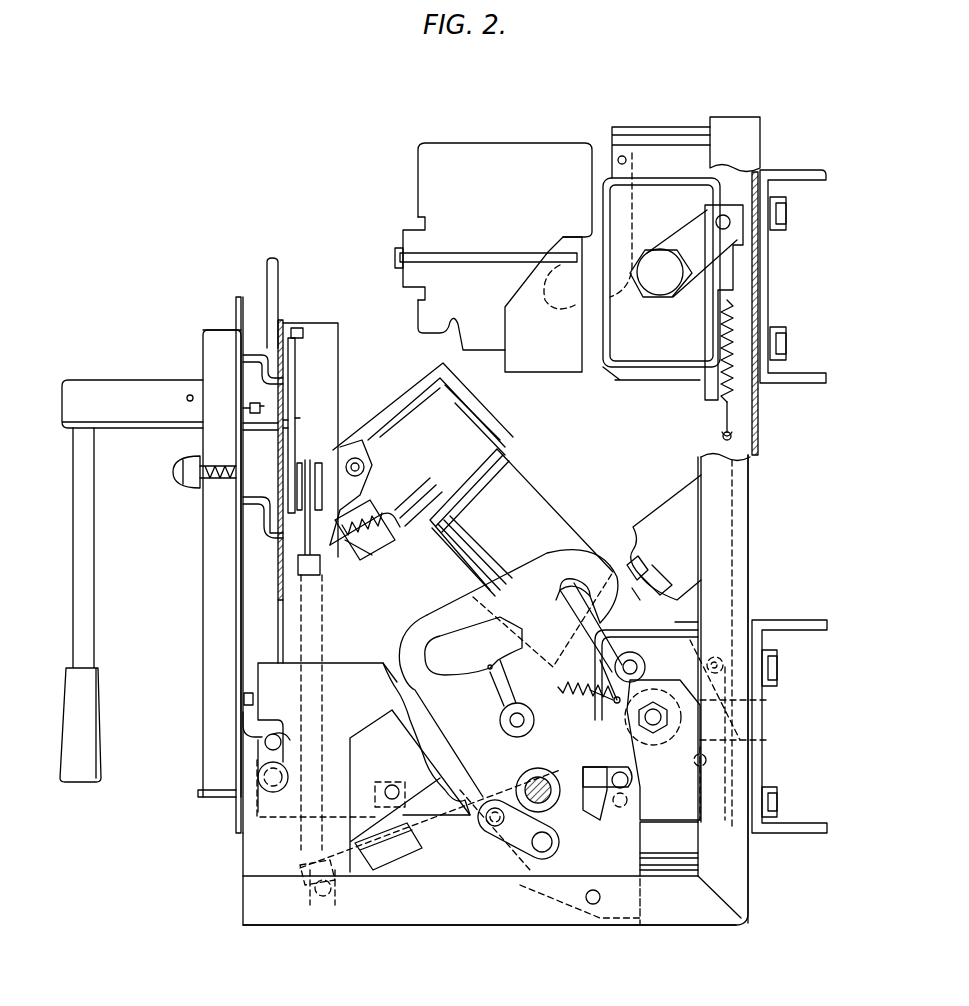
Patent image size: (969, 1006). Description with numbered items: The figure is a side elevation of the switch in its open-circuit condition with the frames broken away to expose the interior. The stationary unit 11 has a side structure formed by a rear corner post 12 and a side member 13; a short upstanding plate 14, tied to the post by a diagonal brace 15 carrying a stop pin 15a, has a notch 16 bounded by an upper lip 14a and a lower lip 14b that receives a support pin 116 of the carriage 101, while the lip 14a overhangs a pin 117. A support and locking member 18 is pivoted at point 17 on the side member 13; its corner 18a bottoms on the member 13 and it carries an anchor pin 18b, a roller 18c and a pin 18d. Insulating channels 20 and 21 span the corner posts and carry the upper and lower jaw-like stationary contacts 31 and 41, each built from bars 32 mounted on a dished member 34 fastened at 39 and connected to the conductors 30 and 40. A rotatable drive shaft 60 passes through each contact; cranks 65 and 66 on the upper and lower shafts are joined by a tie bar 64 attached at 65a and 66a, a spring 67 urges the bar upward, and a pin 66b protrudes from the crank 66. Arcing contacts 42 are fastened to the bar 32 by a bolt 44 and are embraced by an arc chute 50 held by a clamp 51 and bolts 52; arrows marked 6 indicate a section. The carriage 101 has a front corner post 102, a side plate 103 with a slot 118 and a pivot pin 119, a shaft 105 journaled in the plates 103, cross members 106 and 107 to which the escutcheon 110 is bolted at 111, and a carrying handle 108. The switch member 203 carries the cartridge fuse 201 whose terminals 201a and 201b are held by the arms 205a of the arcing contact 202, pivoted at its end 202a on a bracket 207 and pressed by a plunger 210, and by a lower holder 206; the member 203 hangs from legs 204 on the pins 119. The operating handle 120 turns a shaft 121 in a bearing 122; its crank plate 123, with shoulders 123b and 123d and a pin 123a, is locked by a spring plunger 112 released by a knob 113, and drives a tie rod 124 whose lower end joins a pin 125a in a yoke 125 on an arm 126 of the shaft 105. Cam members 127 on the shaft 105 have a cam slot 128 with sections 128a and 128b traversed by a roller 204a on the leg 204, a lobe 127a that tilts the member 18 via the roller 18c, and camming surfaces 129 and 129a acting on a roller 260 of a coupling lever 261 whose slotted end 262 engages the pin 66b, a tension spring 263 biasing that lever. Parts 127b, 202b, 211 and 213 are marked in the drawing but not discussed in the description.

The stationary unit 11 is at (784, 506).
The rear corner post 12 is at (758, 410).
The side member 13 is at (470, 905).
The upstanding plate 14 is at (243, 856).
The horizontal upper lip 14a is at (286, 718).
The vertical lower lip 14b is at (240, 778).
The diagonal brace 15 is at (672, 500).
The stop pin 15a is at (390, 785).
The notch 16 is at (278, 746).
The pivot point 17 is at (593, 905).
The support and locking member 18 is at (628, 840).
The corner 18a is at (642, 930).
The anchor pin 18b is at (628, 780).
The roller 18c is at (500, 806).
The laterally-protruding pin 18d is at (620, 807).
The upper horizontal channel 20 is at (800, 172).
The lower horizontal channel 21 is at (788, 830).
The incoming electric current conductor 30 is at (665, 127).
The upper stationary contact 31 is at (640, 328).
The bar 32 is at (700, 165).
The dished member 34 is at (604, 372).
The fastening means 39 is at (752, 215).
The outgoing electric current conductor 40 is at (670, 868).
The lower stationary contact 41 is at (685, 619).
The arcing contact 42 is at (568, 315).
The bolt 44 is at (626, 161).
The electric arc chute 50 is at (508, 143).
The clamp 51 is at (403, 232).
The long bolt 52 is at (488, 253).
The rotatable drive shaft 60 is at (668, 285).
The tie bar 64 is at (718, 348).
The upper crank 65 is at (690, 240).
The upper pivotal attachment 65a is at (716, 219).
The lower crank 66 is at (752, 735).
The lower pivotal attachment 66a is at (735, 680).
The pin 66b is at (706, 760).
The spring 67 is at (722, 425).
The section line 6 is at (665, 183).
The carriage 101 is at (177, 569).
The front corner post 102 is at (338, 320).
The side plate 103 is at (615, 730).
The shaft 105 is at (527, 780).
The upper cross member 106 is at (292, 335).
The lower cross member 107 is at (240, 716).
The C-shaped carrying handle 108 is at (267, 262).
The escutcheon 110 is at (203, 632).
The bolt location 111 is at (250, 408).
The spring loaded plunger 112 is at (202, 481).
The knob 113 is at (172, 462).
The support pin 116 is at (277, 787).
The pin 117 is at (265, 742).
The slot 118 is at (596, 768).
The pivot pin 119 is at (650, 727).
The manual operating handle 120 is at (73, 592).
The short horizontal shaft 121 is at (120, 380).
The bearing 122 is at (266, 432).
The plate-like crank 123 is at (295, 385).
The pin 123a is at (318, 463).
The first shoulder 123b is at (303, 360).
The opposing shoulder 123d is at (295, 428).
The tie rod 124 is at (300, 600).
The yoke 125 is at (295, 905).
The pin 125a is at (332, 905).
The arm 126 is at (430, 865).
The cam member 127 is at (455, 615).
The lobe 127a is at (515, 855).
The lever pivot 127b is at (548, 850).
The cam slot 128 is at (487, 672).
The vertical section 128a is at (511, 683).
The horizontal section 128b is at (473, 646).
The camming surface 129 is at (552, 612).
The camming edge 129a is at (582, 590).
The cartridge fuse 201 is at (555, 512).
The upper main contact 201a is at (490, 428).
The lower main contact 201b is at (650, 585).
The blade-like arcing contact 202 is at (416, 375).
The end 202a is at (393, 447).
The lever arm 202b is at (470, 400).
The switch member 203 is at (378, 514).
The leg 204 is at (460, 555).
The roller 204a is at (505, 727).
The arms 205a is at (508, 448).
The lower fuse holder 206 is at (628, 565).
The upright bracket 207 is at (352, 458).
The spring-loaded plunger 210 is at (420, 500).
The spring 211 is at (375, 545).
The spring end 213 is at (365, 558).
The roller 260 is at (635, 648).
The coupling lever 261 is at (646, 668).
The slotted end 262 is at (676, 780).
The tension spring 263 is at (600, 702).